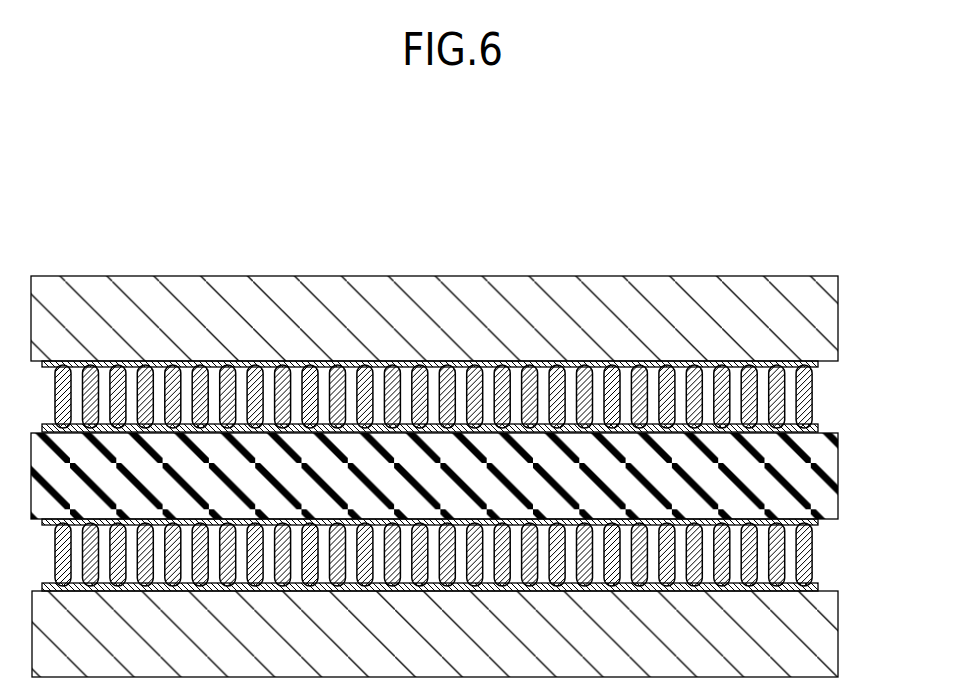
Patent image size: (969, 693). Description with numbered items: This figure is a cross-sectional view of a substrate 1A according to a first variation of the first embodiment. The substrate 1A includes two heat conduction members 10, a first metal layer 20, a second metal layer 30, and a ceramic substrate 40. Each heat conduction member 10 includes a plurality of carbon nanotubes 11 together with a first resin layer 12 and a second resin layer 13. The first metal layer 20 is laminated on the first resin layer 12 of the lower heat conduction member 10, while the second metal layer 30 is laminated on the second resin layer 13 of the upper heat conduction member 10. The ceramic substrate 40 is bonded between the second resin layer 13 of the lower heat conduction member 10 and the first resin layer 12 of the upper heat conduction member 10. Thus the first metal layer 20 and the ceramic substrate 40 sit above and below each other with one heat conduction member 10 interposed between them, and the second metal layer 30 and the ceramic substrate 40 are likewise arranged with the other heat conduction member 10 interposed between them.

The substrate 1A is at (52, 195).
The heat conduction member 10 is at (488, 476).
The carbon nanotubes 11 is at (873, 348).
The first resin layer 12 is at (818, 428).
The second resin layer 13 is at (817, 365).
The first metal layer 20 is at (818, 632).
The second metal layer 30 is at (820, 318).
The ceramic substrate 40 is at (820, 475).